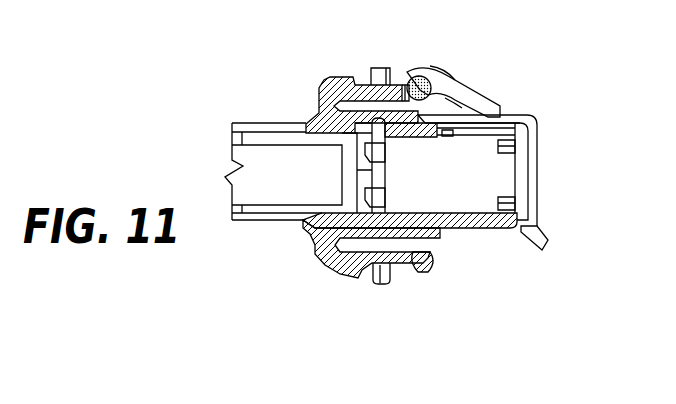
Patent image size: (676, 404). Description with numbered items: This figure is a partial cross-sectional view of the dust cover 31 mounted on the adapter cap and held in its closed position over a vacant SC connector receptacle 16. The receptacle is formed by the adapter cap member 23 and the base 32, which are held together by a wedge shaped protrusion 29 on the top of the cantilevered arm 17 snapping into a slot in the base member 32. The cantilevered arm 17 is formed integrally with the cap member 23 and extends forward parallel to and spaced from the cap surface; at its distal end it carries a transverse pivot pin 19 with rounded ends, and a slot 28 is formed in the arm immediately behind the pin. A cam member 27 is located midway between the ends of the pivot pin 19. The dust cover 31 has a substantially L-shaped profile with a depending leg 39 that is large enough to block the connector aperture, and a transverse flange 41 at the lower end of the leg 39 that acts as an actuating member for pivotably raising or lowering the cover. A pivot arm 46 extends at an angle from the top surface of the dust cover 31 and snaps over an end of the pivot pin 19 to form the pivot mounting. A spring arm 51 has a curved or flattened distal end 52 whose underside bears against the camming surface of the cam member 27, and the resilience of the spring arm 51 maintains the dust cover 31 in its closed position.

The receptacle 16 is at (493, 230).
The cantilevered arm 17 is at (333, 90).
The pivot pin 19 is at (433, 262).
The adapter cap member 23 is at (447, 230).
The cam member 27 is at (458, 78).
The slot 28 is at (404, 83).
The wedge shaped protrusion 29 is at (362, 85).
The dust cover member 31 is at (537, 117).
The base member 32 is at (265, 228).
The depending leg 39 is at (540, 170).
The transverse flange 41 is at (547, 238).
The second pivot arm 46 is at (500, 113).
The spring arm 51 is at (443, 72).
The distal end of spring arm 52 is at (418, 72).